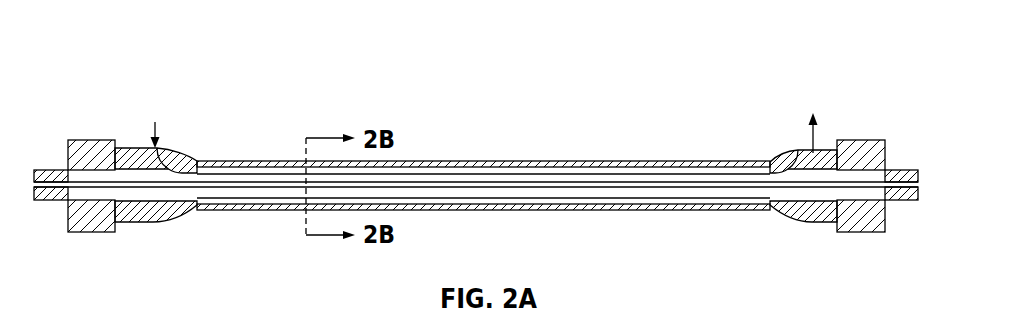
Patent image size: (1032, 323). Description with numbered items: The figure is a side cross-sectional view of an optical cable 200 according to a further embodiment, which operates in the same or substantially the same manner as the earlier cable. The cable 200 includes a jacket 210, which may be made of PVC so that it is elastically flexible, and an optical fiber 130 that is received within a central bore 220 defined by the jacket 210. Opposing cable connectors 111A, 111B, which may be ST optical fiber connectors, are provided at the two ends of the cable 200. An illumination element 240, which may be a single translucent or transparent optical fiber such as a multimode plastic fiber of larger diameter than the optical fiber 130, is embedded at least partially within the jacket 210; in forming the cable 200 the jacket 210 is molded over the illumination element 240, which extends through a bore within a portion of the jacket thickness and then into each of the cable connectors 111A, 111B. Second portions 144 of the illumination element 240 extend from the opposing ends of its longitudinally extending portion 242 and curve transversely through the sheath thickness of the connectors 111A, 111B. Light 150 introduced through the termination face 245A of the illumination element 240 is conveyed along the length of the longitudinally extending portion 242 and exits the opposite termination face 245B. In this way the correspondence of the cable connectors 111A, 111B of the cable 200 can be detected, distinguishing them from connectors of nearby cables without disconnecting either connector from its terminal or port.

The cable 200 is at (110, 43).
The cable connector 111A is at (112, 258).
The cable connector 111B is at (800, 236).
The second portion of illumination element 144 is at (165, 151).
The termination face 245A is at (163, 148).
The termination face 245B is at (818, 152).
The light 150 is at (155, 122).
The illumination element 240 is at (474, 153).
The longitudinally extending portion 242 is at (406, 173).
The optical fiber 130 is at (547, 185).
The jacket 210 is at (509, 227).
The central bore 220 is at (612, 210).